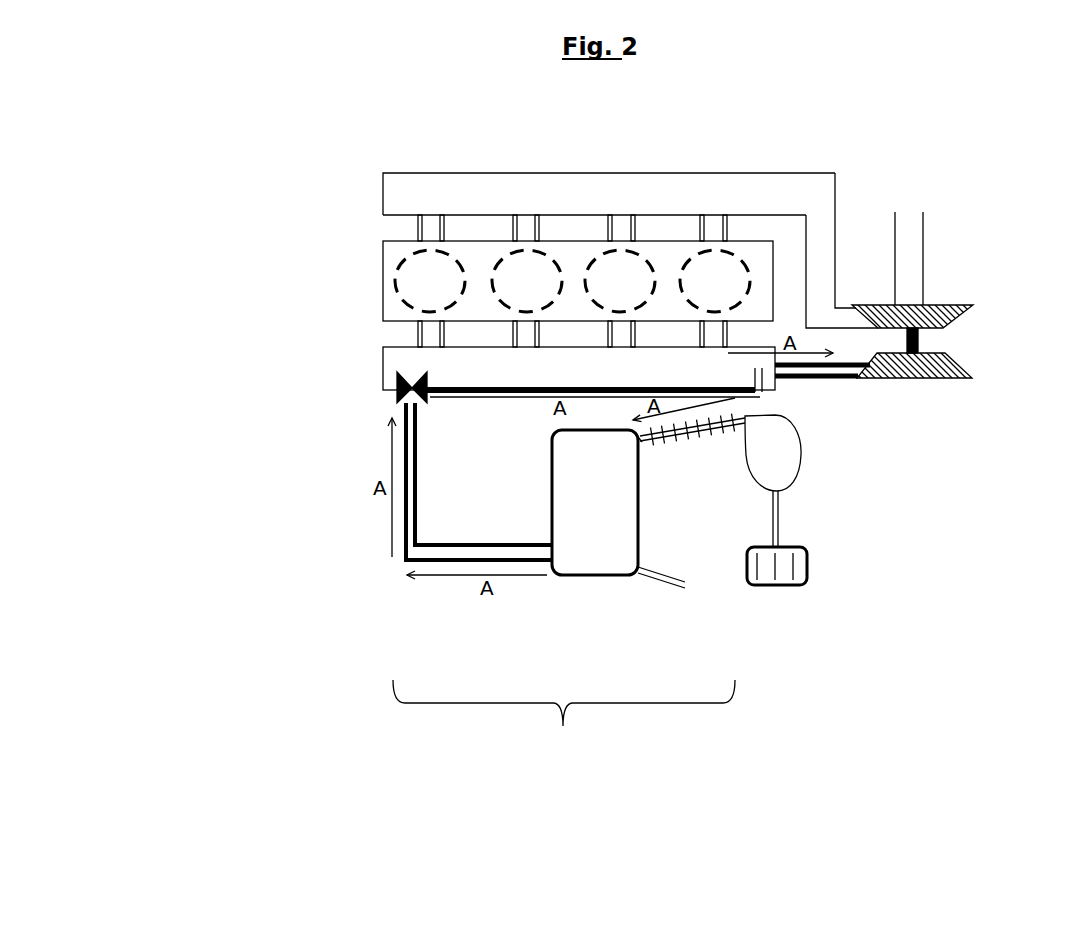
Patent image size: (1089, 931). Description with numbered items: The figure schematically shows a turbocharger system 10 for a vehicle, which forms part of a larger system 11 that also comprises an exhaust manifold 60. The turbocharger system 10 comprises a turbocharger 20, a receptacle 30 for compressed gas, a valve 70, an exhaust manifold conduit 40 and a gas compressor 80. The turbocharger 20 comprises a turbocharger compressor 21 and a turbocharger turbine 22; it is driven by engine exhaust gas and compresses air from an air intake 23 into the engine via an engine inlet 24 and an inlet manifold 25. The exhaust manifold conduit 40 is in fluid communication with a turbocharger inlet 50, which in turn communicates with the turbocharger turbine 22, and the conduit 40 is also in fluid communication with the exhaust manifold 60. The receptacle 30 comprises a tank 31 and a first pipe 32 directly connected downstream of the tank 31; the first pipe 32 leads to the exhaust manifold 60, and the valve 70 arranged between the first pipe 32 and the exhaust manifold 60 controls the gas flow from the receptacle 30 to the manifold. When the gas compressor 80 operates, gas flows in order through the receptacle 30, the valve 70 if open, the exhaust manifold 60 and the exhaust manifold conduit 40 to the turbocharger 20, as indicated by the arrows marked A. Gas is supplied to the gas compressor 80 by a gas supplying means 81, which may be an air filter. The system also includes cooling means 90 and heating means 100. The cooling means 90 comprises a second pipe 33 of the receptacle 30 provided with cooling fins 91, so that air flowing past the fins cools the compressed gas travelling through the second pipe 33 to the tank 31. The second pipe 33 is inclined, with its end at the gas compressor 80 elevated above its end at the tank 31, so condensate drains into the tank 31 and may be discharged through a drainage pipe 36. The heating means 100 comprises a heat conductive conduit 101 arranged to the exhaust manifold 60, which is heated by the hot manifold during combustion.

The turbocharger system 10 is at (360, 522).
The system 11 is at (340, 163).
The turbocharger 20 is at (990, 349).
The turbocharger compressor 21 is at (958, 303).
The turbocharger turbine 22 is at (957, 380).
The air intake 23 is at (913, 263).
The engine inlet 24 is at (822, 250).
The inlet manifold 25 is at (685, 187).
The receptacle 30 is at (564, 721).
The tank 31 is at (613, 511).
The first pipe 32 is at (457, 548).
The second pipe 33 is at (712, 440).
The drainage pipe 36 is at (650, 575).
The exhaust manifold conduit 40 is at (822, 372).
The turbocharger inlet 50 is at (858, 383).
The exhaust manifold 60 is at (584, 380).
The valve 70 is at (397, 387).
The gas compressor 80 is at (792, 463).
The gas supplying means 81 is at (782, 570).
The cooling means 90 is at (698, 470).
The cooling fins 91 is at (650, 443).
The heating means 100 is at (487, 400).
The heat conductive conduit 101 is at (532, 392).